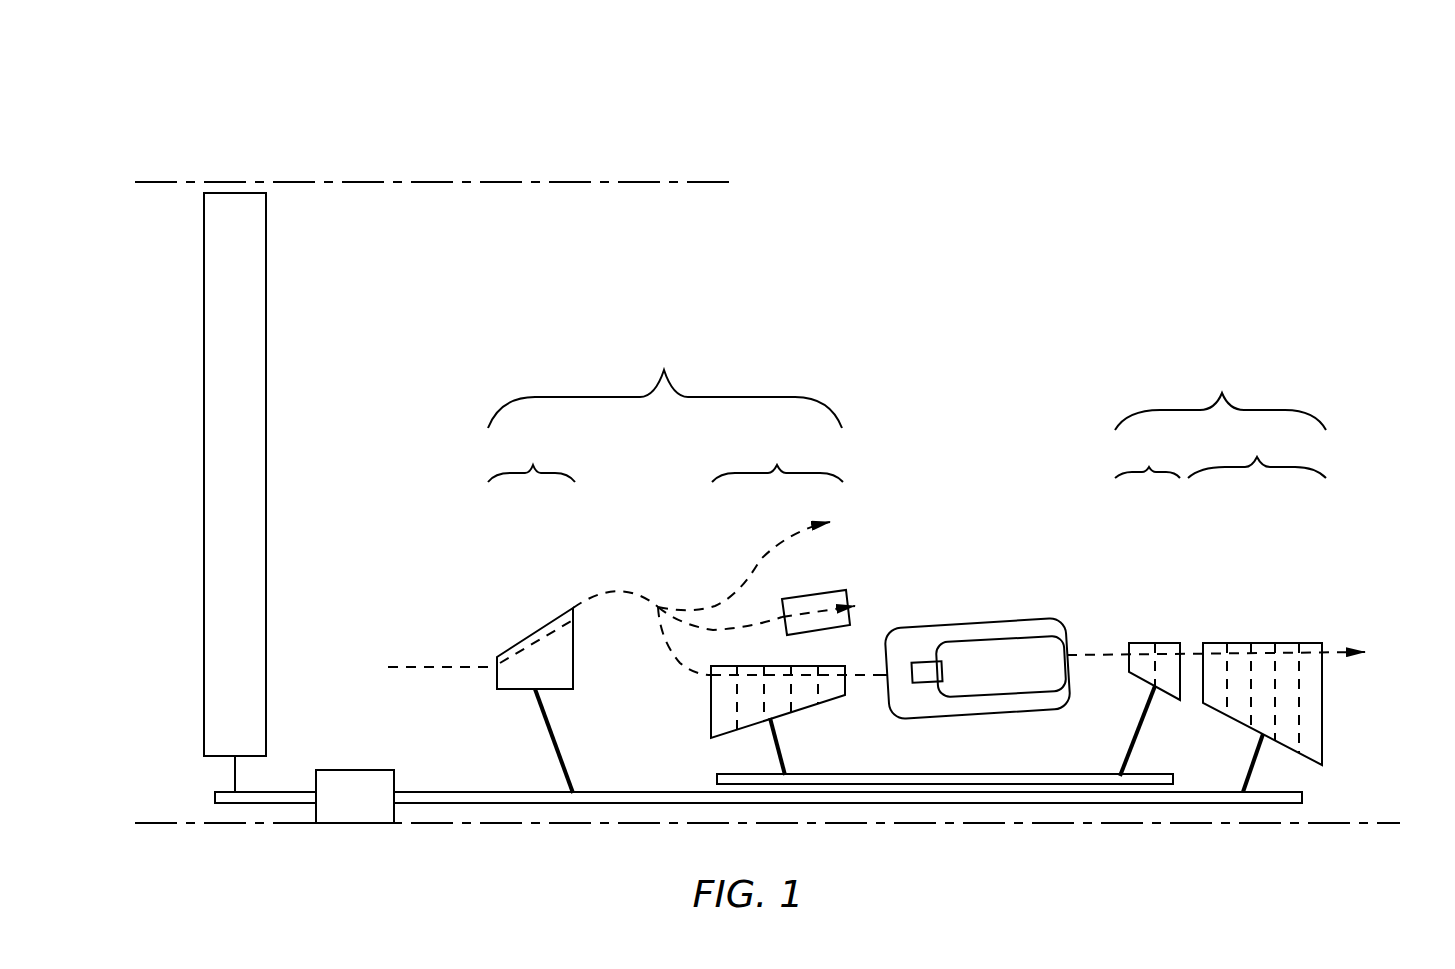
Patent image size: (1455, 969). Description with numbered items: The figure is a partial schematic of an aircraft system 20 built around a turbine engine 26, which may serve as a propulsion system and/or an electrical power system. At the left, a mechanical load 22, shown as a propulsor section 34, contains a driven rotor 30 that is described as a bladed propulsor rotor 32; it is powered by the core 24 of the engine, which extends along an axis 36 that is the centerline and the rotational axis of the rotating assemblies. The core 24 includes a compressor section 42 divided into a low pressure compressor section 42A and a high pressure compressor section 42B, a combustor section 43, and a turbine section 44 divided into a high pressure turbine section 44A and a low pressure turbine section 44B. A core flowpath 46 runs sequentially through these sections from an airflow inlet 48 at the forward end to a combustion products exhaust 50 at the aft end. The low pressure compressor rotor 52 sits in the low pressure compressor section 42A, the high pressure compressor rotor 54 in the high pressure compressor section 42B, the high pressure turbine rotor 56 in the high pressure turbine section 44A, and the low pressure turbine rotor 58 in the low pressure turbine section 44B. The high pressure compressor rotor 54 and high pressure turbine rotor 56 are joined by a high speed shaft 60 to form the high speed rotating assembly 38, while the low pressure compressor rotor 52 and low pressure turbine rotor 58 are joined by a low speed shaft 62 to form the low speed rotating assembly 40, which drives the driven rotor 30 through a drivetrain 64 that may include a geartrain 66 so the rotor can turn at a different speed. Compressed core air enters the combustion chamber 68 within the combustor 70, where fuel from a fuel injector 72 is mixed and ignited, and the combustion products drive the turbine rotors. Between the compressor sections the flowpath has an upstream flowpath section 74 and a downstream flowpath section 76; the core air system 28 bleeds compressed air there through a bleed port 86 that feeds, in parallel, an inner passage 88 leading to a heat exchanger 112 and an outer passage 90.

The aircraft system 20 is at (1010, 88).
The mechanical load 22 is at (432, 138).
The core 24 is at (660, 855).
The turbine engine 26 is at (985, 268).
The core air system 28 is at (700, 560).
The rotor 30 is at (174, 492).
The propulsor rotor 32 is at (204, 362).
The propulsor section 34 is at (228, 165).
The axis 36 is at (177, 823).
The high speed rotating assembly 38 is at (715, 760).
The low speed rotating assembly 40 is at (1315, 780).
The compressor section 42 is at (676, 570).
The low pressure compressor section 42A is at (520, 617).
The high pressure compressor section 42B is at (799, 606).
The combustor section 43 is at (972, 583).
The turbine section 44 is at (1206, 581).
The high pressure turbine section 44A is at (1206, 609).
The low pressure turbine section 44B is at (1249, 612).
The core flowpath 46 is at (440, 667).
The airflow inlet 48 is at (388, 665).
The combustion products exhaust 50 is at (1383, 653).
The low pressure compressor rotor 52 is at (545, 718).
The high pressure compressor rotor 54 is at (790, 745).
The high pressure turbine rotor 56 is at (1135, 730).
The low pressure turbine rotor 58 is at (1250, 758).
The high speed shaft 60 is at (905, 773).
The low speed shaft 62 is at (915, 803).
The drivetrain 64 is at (354, 757).
The geartrain 66 is at (360, 750).
The combustion chamber 68 is at (1001, 667).
The combustor 70 is at (977, 640).
The fuel injector 72 is at (930, 660).
The upstream flowpath section 74 is at (596, 604).
The downstream flowpath section 76 is at (668, 646).
The bleed port 86 is at (658, 605).
The inner passage 88 is at (716, 632).
The outer passage 90 is at (762, 562).
The heat exchanger 112 is at (831, 592).